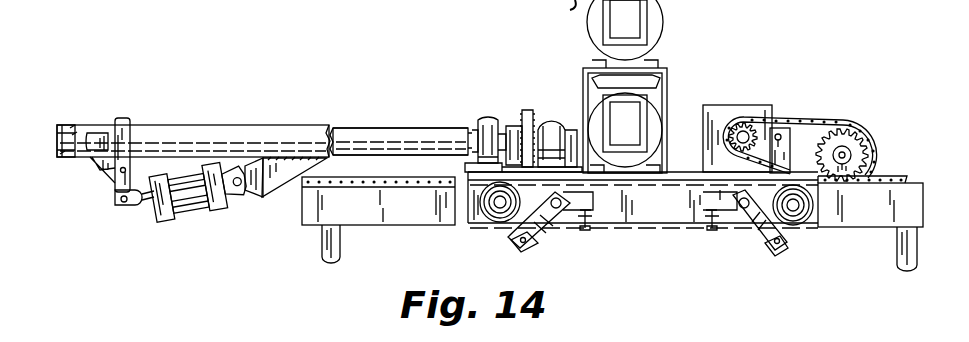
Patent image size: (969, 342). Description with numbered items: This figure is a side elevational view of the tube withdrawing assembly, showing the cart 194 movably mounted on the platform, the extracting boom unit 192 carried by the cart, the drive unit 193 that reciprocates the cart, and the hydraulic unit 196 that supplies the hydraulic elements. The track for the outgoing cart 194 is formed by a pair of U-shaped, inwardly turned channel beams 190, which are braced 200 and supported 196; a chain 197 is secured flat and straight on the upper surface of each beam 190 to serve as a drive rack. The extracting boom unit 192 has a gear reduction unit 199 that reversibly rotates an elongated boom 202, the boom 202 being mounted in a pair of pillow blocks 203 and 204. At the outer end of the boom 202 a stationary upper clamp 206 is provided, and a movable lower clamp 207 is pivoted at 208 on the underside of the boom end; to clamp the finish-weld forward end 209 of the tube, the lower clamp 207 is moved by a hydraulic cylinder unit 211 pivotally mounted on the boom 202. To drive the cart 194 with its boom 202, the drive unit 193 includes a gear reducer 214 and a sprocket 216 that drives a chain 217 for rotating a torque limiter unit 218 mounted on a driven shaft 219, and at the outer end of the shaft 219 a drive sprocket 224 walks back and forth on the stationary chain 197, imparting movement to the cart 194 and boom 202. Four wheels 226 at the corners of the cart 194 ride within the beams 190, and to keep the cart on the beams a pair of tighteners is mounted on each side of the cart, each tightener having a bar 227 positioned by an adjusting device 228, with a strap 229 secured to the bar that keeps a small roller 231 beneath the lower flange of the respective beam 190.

The channel beam 190 is at (422, 208).
The extracting boom unit 192 is at (214, 128).
The drive unit 193 is at (822, 96).
The cart 194 is at (660, 208).
The hydraulic unit 196 is at (677, 43).
The chain 197 is at (318, 192).
The gear reduction unit 199 is at (527, 110).
The brace 200 is at (322, 247).
The boom 202 is at (398, 130).
The pillow block 203 is at (483, 116).
The pillow block 204 is at (555, 120).
The stationary upper clamp 206 is at (98, 137).
The movable lower clamp 207 is at (104, 168).
The pivot 208 is at (121, 178).
The forward end of the tube 209 is at (70, 126).
The hydraulic cylinder unit 211 is at (190, 192).
The gear reducer 214 is at (724, 105).
The sprocket 216 is at (752, 123).
The chain 217 is at (805, 140).
The torque limiter unit 218 is at (838, 133).
The driven shaft 219 is at (845, 154).
The drive sprocket 224 is at (862, 158).
The wheel 226 is at (495, 216).
The bar 227 is at (575, 208).
The adjusting device 228 is at (590, 232).
The strap 229 is at (537, 226).
The roller 231 is at (520, 242).